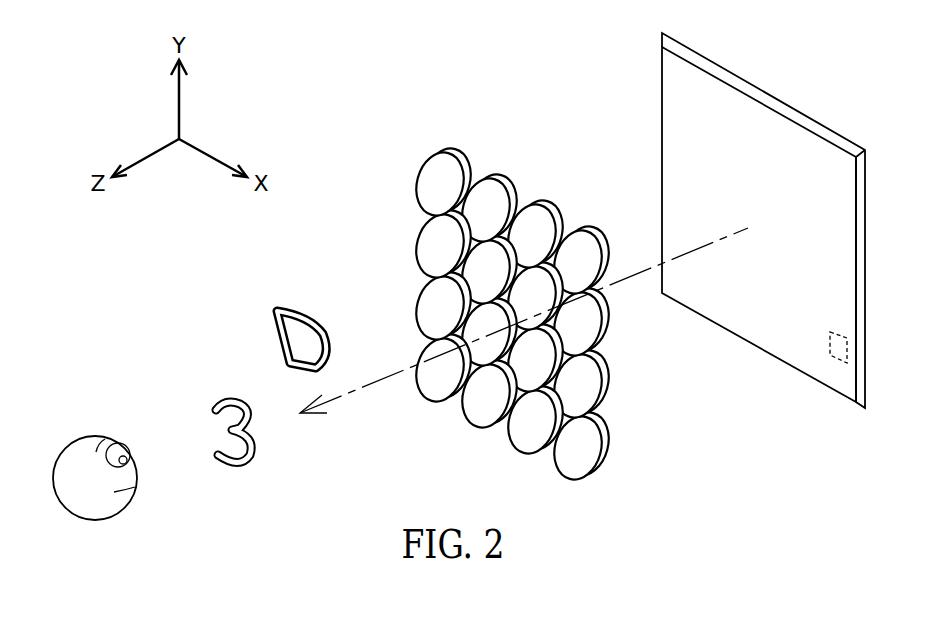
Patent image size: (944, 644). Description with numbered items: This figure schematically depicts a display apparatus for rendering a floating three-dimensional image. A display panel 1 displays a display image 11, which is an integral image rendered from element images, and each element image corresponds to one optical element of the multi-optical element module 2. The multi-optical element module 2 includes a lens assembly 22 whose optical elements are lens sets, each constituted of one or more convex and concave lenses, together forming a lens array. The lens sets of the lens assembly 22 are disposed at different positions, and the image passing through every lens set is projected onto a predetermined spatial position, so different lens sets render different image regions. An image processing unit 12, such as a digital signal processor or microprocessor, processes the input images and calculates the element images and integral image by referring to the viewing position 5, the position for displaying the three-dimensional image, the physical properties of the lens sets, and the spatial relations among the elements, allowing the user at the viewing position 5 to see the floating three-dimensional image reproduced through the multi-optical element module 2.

The display panel 1 is at (763, 232).
The display image 11 is at (837, 162).
The image processing unit 12 is at (833, 357).
The multi-optical element module 2 is at (485, 314).
The lens assembly 22 is at (440, 240).
The viewing position 5 is at (102, 435).